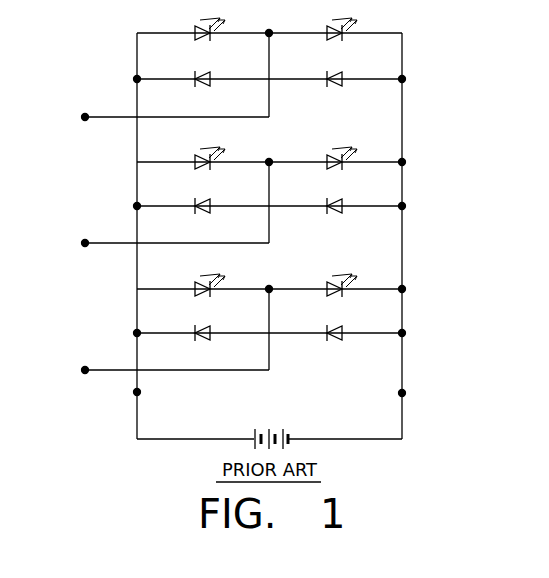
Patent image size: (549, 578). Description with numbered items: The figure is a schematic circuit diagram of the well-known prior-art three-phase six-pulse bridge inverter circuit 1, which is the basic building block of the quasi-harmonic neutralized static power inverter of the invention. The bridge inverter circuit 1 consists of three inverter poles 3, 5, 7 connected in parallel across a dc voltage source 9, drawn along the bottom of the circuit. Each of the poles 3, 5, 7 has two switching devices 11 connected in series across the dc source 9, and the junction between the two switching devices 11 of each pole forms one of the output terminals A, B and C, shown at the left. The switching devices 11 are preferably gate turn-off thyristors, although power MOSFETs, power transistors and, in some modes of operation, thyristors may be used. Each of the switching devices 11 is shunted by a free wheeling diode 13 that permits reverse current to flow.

The six-pulse bridge inverter circuit 1 is at (263, 224).
The inverter pole 3 is at (269, 27).
The inverter pole 5 is at (269, 156).
The inverter pole 7 is at (269, 283).
The dc voltage source 9 is at (286, 428).
The switching device 11 is at (197, 29).
The free wheeling diode 13 is at (212, 76).